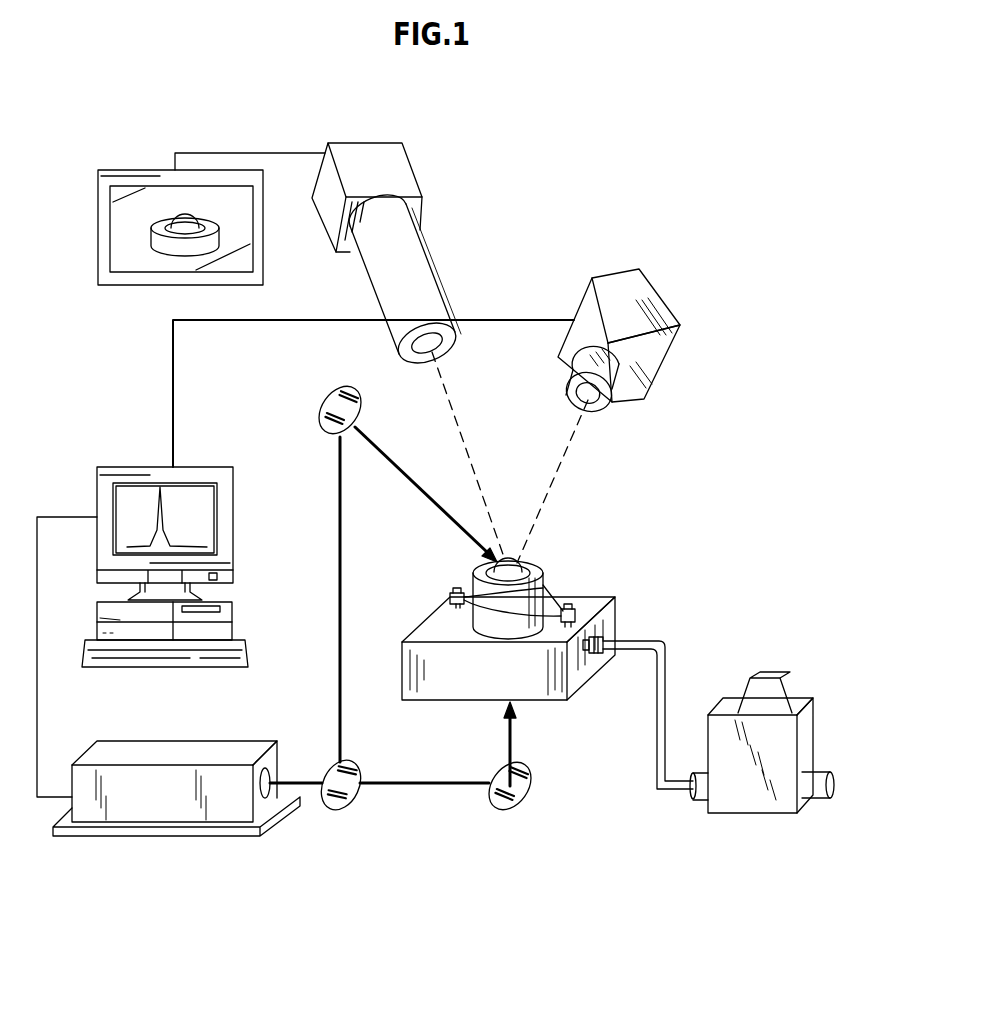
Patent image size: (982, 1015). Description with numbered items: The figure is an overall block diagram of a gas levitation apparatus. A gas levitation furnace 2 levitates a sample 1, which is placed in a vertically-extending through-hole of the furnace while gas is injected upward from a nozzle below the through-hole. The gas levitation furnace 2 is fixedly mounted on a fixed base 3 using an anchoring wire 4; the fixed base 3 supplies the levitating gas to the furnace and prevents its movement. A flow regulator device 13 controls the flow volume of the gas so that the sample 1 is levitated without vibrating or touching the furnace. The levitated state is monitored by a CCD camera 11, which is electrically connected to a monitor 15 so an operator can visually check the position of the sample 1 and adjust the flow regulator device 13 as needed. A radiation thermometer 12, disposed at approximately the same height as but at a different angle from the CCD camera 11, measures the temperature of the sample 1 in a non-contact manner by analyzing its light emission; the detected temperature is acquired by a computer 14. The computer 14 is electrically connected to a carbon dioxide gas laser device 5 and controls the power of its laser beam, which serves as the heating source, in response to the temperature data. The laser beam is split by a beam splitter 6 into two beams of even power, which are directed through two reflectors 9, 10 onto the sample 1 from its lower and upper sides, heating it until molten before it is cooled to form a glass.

The sample 1 is at (515, 565).
The gas levitation furnace 2 is at (540, 572).
The fixed base 3 is at (608, 621).
The anchoring wire 4 is at (565, 601).
The carbon dioxide gas laser device 5 is at (120, 741).
The beam splitter 6 is at (345, 811).
The reflector 9 is at (513, 738).
The reflector 10 is at (437, 512).
The CCD camera 11 is at (366, 143).
The radiation thermometer 12 is at (592, 278).
The flow regulator device 13 is at (740, 814).
The computer 14 is at (108, 467).
The monitor 15 is at (180, 170).